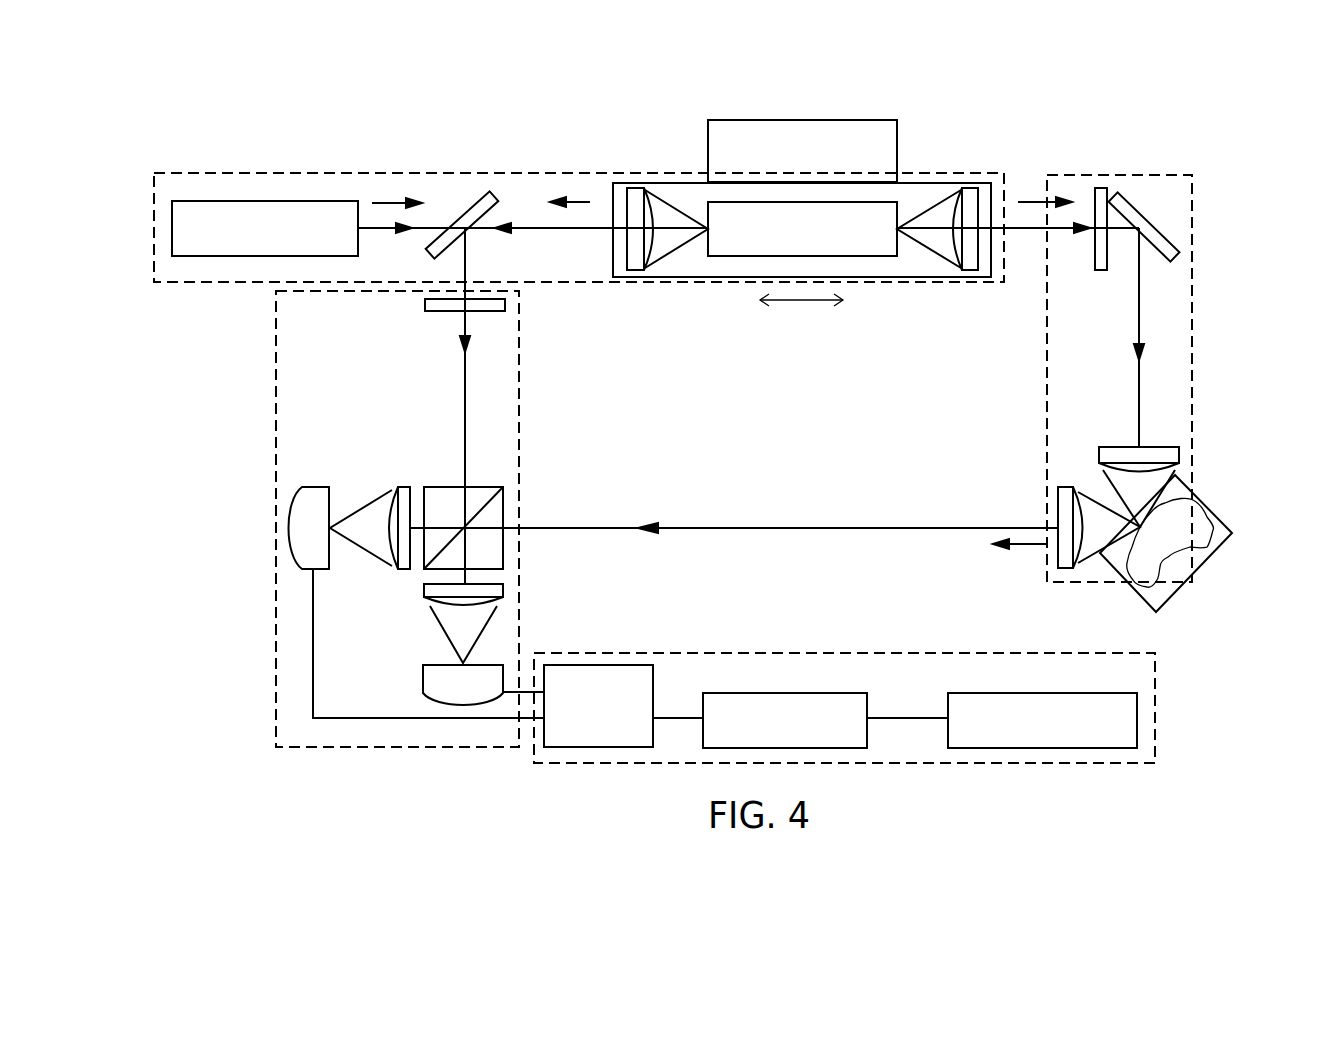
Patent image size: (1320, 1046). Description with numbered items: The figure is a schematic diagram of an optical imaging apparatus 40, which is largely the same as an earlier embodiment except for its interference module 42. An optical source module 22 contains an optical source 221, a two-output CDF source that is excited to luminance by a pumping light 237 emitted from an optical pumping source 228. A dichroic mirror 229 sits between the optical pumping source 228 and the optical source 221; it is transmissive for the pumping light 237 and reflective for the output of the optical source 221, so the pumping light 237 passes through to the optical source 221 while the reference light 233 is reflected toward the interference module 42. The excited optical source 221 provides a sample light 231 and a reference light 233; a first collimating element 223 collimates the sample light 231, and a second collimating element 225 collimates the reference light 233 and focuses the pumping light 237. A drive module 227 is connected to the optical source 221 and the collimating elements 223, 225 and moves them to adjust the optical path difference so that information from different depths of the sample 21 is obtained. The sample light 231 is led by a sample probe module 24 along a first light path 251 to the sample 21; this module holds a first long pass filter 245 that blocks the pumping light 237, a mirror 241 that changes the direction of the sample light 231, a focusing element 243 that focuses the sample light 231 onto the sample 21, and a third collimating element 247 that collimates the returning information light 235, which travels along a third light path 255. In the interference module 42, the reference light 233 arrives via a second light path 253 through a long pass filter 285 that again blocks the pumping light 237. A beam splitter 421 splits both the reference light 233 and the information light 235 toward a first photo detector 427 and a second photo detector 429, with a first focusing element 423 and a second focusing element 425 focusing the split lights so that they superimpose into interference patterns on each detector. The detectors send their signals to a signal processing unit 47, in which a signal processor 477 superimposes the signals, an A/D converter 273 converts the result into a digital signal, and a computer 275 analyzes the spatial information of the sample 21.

The optical imaging apparatus 40 is at (1279, 104).
The sample 21 is at (1202, 507).
The optical source module 22 is at (687, 173).
The sample probe module 24 is at (1140, 175).
The interference module 42 is at (276, 398).
The signal processing unit 47 is at (885, 653).
The optical source 221 is at (720, 257).
The first collimating element 223 is at (972, 187).
The second collimating element 225 is at (625, 187).
The drive module 227 is at (872, 120).
The optical pumping source 228 is at (278, 200).
The dichroic mirror 229 is at (477, 192).
The sample light 231 is at (1035, 202).
The reference light 233 is at (565, 200).
The information light 235 is at (1032, 548).
The pumping light 237 is at (407, 200).
The mirror 241 is at (1170, 237).
The focusing element 243 is at (1173, 447).
The first long pass filter 245 is at (1105, 188).
The third collimating element 247 is at (1060, 488).
The first light path 251 is at (1140, 320).
The second light path 253 is at (562, 232).
The third light path 255 is at (812, 527).
The A/D converter 273 is at (775, 692).
The computer 275 is at (1087, 693).
The long pass filter 285 is at (427, 305).
The beam splitter 421 is at (503, 488).
The first focusing element 423 is at (396, 488).
The second focusing element 425 is at (503, 593).
The first photo detector 427 is at (294, 487).
The second photo detector 429 is at (427, 665).
The signal processor 477 is at (617, 665).